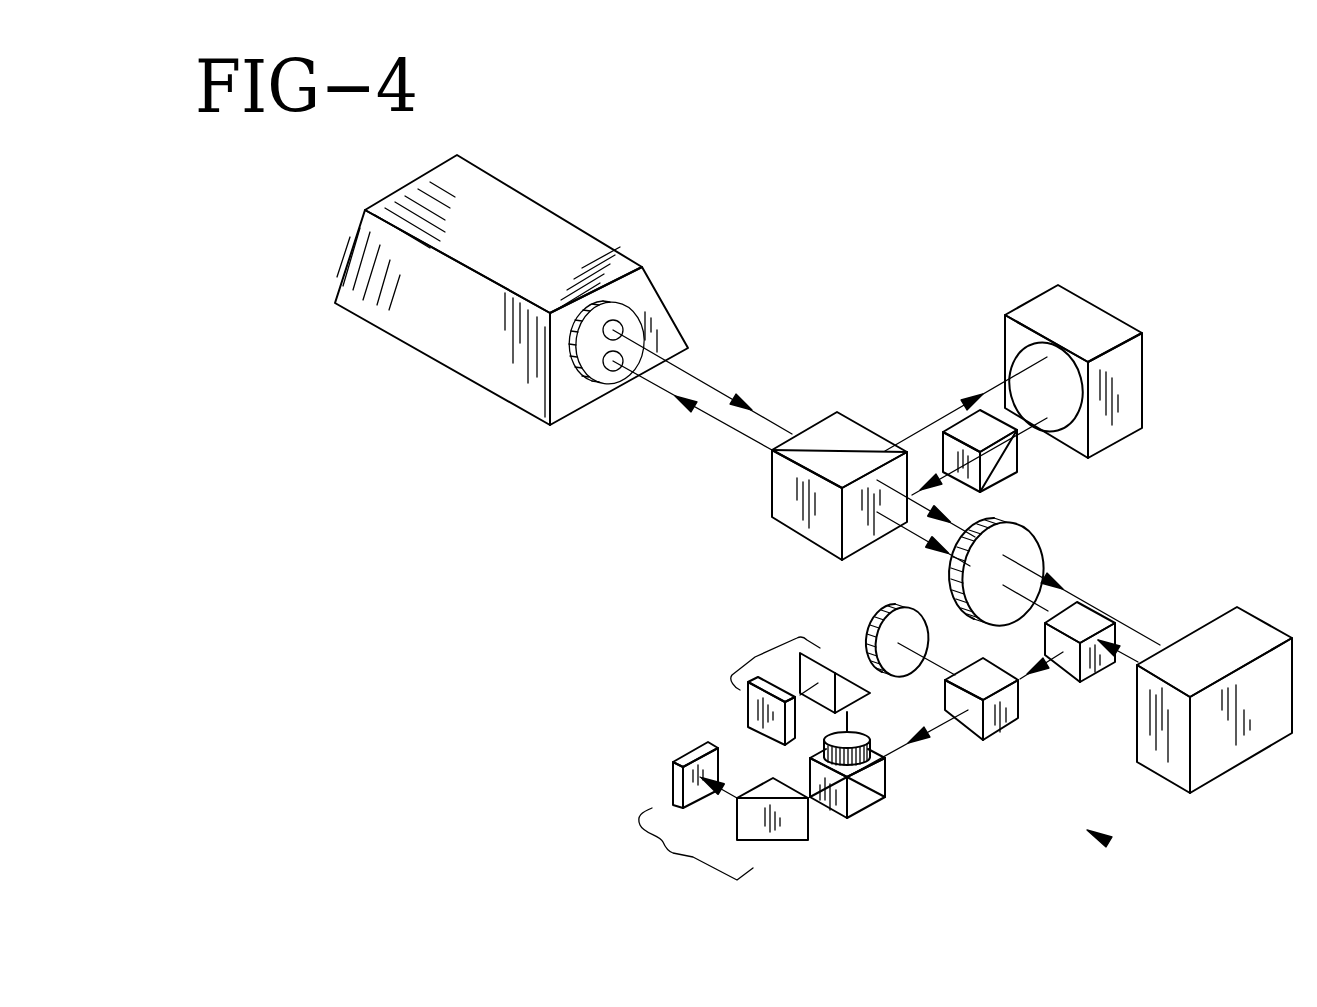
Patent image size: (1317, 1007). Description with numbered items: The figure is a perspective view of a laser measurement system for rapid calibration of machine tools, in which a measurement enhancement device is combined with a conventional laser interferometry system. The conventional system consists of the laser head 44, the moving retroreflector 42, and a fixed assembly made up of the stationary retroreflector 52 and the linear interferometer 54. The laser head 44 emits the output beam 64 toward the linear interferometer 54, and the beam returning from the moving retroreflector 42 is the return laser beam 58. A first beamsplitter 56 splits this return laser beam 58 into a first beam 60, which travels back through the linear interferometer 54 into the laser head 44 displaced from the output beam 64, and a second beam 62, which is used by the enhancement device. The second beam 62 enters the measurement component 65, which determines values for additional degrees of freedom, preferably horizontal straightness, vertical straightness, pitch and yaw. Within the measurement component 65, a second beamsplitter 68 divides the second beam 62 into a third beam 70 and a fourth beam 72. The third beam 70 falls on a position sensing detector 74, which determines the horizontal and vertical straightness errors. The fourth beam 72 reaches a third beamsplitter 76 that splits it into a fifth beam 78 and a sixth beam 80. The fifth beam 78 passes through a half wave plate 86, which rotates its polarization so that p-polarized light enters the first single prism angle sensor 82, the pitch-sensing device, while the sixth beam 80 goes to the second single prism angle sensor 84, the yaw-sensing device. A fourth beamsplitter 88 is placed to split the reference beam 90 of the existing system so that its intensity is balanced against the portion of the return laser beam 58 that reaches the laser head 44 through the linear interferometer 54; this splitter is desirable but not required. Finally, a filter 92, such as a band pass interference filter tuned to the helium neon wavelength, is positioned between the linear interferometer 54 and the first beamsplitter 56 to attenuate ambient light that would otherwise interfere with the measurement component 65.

The moving retroreflector 42 is at (1260, 618).
The laser head 44 is at (556, 213).
The stationary retroreflector 52 is at (1037, 293).
The linear interferometer 54 is at (858, 420).
The first beamsplitter 56 is at (1100, 608).
The return laser beam 58 is at (1123, 658).
The first beam 60 is at (1045, 622).
The second beam 62 is at (1060, 656).
The output beam 64 is at (702, 380).
The measurement component 65 is at (1110, 843).
The second beamsplitter 68 is at (1002, 718).
The third beam 70 is at (927, 660).
The fourth beam 72 is at (888, 757).
The position sensing detector 74 is at (873, 622).
The third beamsplitter 76 is at (873, 803).
The fifth beam 78 is at (851, 717).
The sixth beam 80 is at (822, 790).
The first single prism angle sensor 82 is at (757, 656).
The second single prism angle sensor 84 is at (673, 853).
The half wave plate 86 is at (825, 742).
The fourth beamsplitter 88 is at (1012, 472).
The reference beam 90 is at (1012, 428).
The filter 92 is at (1045, 553).